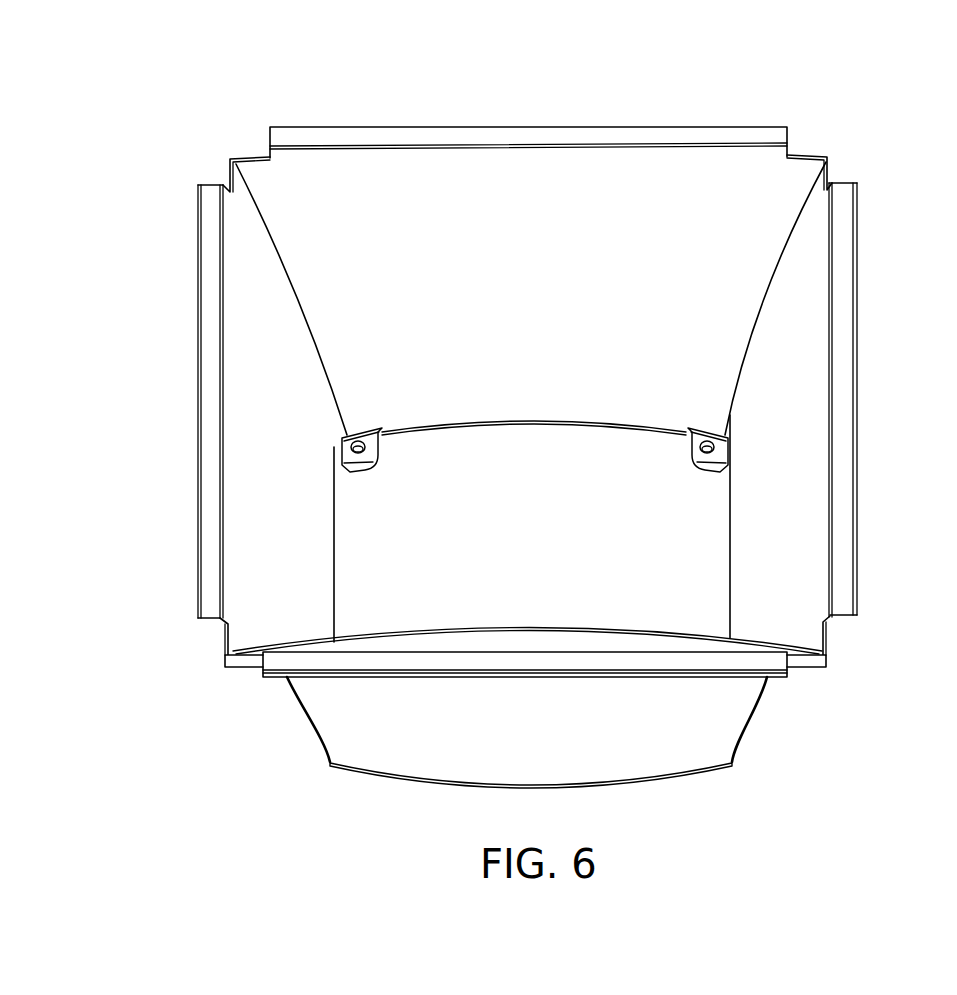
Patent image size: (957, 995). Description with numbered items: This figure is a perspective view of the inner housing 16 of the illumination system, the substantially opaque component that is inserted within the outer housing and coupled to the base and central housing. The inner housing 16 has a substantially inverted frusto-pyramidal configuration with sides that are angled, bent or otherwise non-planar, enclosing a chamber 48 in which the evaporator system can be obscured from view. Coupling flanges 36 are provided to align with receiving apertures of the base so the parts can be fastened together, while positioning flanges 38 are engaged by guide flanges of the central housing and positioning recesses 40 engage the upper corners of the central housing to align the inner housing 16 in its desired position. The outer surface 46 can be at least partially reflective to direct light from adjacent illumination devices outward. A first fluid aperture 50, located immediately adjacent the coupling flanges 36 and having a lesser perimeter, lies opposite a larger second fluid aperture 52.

The inner housing 16 is at (897, 152).
The coupling flanges 36 is at (370, 470).
The positioning flanges 38 is at (530, 127).
The positioning recesses 40 is at (228, 150).
The outer surface 46 is at (416, 740).
The chamber 48 is at (423, 210).
The first fluid aperture 50 is at (663, 798).
The second fluid aperture 52 is at (797, 253).